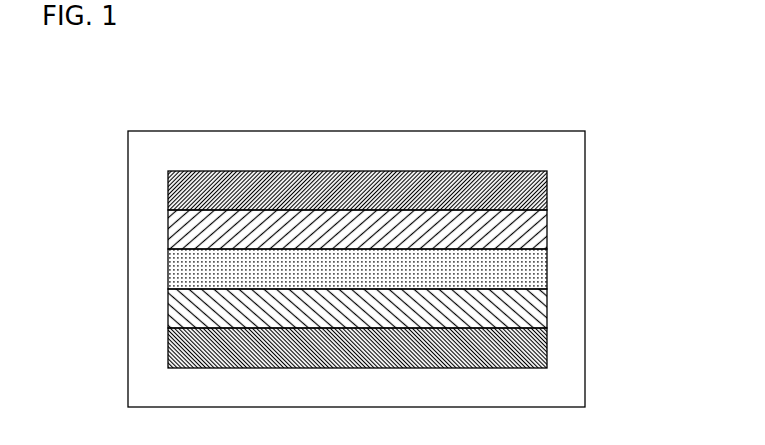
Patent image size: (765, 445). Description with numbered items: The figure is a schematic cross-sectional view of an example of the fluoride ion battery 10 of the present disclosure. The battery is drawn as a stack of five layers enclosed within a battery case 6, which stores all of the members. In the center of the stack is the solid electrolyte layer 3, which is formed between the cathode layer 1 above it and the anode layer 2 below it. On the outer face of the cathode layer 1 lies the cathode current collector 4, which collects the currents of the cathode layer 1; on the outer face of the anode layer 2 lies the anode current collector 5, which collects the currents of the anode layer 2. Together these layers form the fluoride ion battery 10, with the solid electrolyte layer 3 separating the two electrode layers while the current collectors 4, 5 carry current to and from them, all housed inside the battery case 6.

The fluoride ion battery 10 is at (565, 110).
The battery case 6 is at (559, 159).
The cathode current collector 4 is at (522, 196).
The cathode layer 1 is at (522, 235).
The solid electrolyte layer 3 is at (522, 274).
The anode layer 2 is at (522, 313).
The anode current collector 5 is at (522, 350).